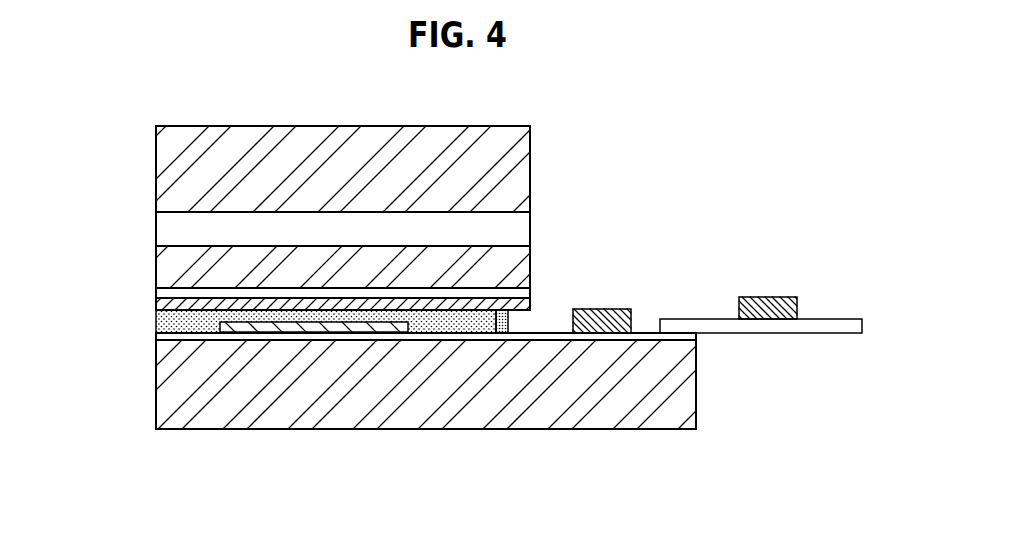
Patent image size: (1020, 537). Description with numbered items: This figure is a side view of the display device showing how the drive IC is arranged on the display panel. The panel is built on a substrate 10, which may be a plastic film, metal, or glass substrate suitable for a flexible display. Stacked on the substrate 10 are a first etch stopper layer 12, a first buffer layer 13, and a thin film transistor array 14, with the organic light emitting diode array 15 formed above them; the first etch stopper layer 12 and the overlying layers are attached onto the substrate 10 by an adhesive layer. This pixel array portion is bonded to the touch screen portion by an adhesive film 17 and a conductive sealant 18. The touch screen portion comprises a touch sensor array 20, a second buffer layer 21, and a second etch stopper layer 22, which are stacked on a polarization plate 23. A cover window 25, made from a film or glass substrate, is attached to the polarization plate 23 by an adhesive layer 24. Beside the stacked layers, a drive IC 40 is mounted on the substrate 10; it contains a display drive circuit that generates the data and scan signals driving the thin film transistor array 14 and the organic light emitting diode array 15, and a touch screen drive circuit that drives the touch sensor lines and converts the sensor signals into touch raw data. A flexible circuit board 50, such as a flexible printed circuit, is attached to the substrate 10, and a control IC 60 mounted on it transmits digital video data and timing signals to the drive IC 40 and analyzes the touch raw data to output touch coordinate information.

The substrate 10 is at (162, 382).
The first etch stopper layer 12 is at (426, 419).
The first buffer layer 13 is at (426, 419).
The thin film transistor array 14 is at (648, 337).
The organic light emitting diode array 15 is at (343, 326).
The adhesive film 17 is at (162, 322).
The conductive sealant 18 is at (508, 322).
The touch sensor array 20 is at (162, 303).
The second buffer layer 21 is at (291, 283).
The second etch stopper layer 22 is at (162, 293).
The polarization plate 23 is at (526, 270).
The adhesive layer 24 is at (526, 228).
The cover window 25 is at (526, 168).
The drive IC 40 is at (631, 312).
The flexible circuit board 50 is at (821, 327).
The control IC 60 is at (766, 297).